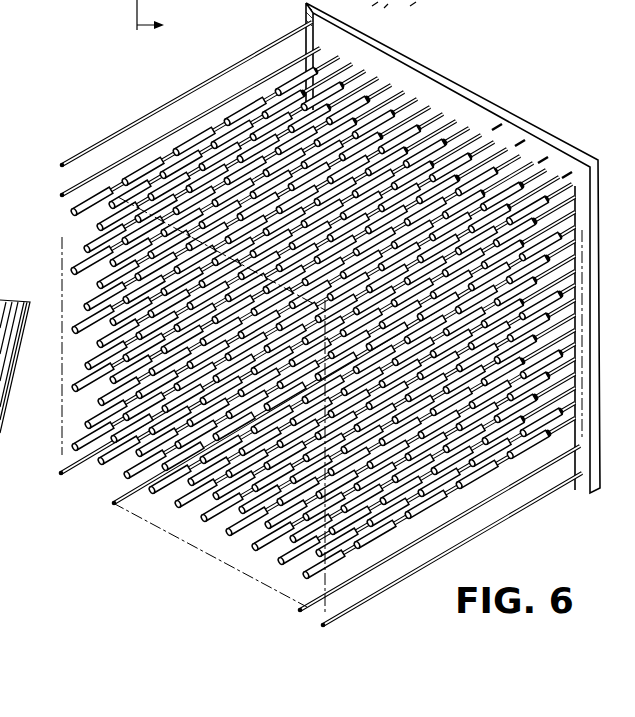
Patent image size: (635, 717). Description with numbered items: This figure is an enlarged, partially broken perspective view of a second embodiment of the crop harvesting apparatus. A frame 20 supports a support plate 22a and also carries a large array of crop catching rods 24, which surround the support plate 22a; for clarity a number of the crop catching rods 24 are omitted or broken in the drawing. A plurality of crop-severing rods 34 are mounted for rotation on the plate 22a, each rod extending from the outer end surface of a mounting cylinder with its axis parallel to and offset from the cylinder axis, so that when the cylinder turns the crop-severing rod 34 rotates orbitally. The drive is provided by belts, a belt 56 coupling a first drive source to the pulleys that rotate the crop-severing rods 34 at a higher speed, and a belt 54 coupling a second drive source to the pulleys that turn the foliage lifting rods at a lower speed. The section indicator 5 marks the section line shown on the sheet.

The frame 20 is at (584, 166).
The support plate 22a is at (441, 125).
The crop catching rods 24 is at (64, 196).
The crop-severing rods 34 is at (62, 262).
The belt 54 is at (386, 0).
The belt 56 is at (424, 4).
The section line 5- 5 is at (193, 307).